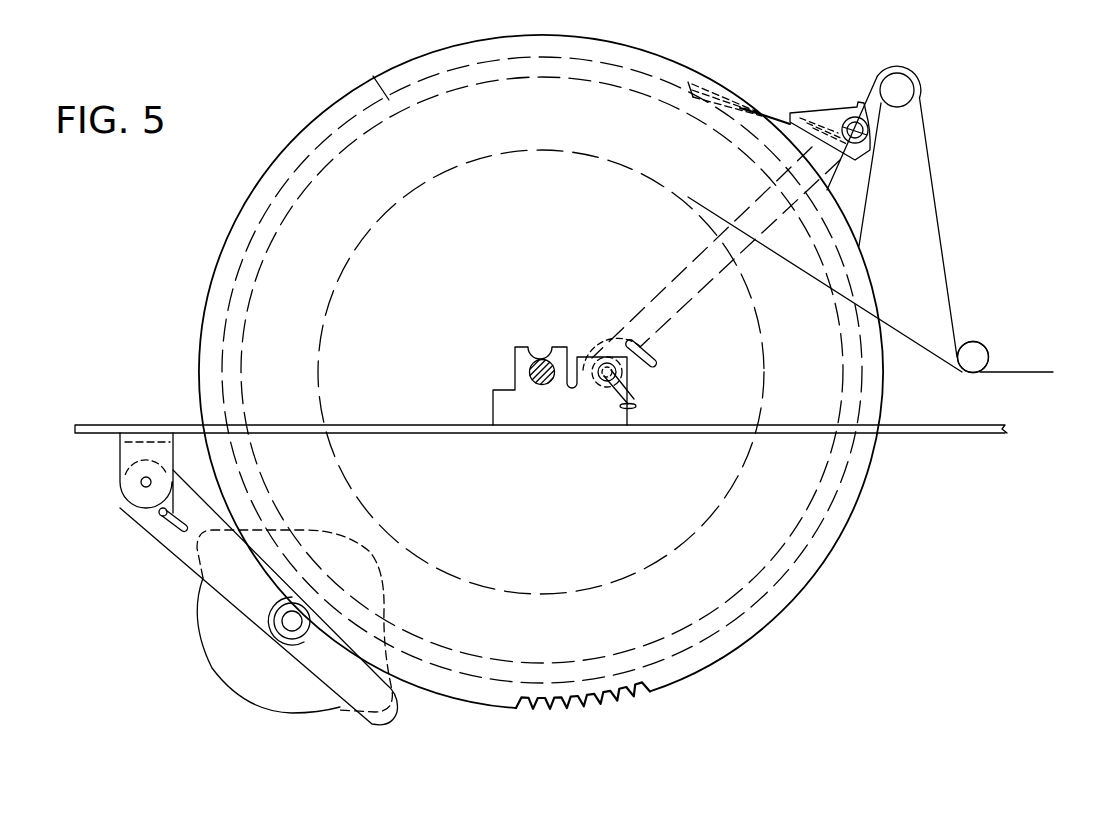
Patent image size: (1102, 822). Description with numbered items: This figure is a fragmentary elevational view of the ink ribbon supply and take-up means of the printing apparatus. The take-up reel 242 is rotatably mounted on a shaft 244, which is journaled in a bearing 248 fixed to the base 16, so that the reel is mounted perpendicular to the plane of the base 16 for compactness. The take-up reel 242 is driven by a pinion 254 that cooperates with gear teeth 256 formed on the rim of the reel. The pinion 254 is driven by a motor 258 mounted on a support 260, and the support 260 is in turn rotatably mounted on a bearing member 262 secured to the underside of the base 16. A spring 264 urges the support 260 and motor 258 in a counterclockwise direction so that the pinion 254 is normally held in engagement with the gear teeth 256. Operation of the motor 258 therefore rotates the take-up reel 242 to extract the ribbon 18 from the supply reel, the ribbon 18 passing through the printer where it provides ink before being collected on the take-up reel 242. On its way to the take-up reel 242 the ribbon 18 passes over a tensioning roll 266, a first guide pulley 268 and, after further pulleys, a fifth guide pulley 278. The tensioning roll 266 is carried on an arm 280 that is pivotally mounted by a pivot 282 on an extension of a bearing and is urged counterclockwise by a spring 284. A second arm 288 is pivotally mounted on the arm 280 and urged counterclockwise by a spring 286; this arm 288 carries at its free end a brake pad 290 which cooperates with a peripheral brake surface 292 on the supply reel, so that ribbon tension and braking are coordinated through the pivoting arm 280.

The base 16 is at (950, 430).
The ribbon 18 is at (930, 178).
The take-up reel 242 is at (772, 603).
The shaft 244 is at (530, 370).
The bearing 248 is at (493, 407).
The pinion 254 is at (262, 614).
The gear teeth 256 is at (637, 692).
The motor 258 is at (211, 653).
The support 260 is at (183, 548).
The bearing member 262 is at (123, 455).
The spring 264 is at (159, 514).
The tensioning roll 266 is at (914, 89).
The first guide pulley 268 is at (977, 345).
The fifth guide pulley 278 is at (973, 357).
The arm 280 is at (667, 278).
The pivot 282 is at (626, 387).
The spring 284 is at (657, 349).
The spring 286 is at (857, 112).
The arm 288 is at (768, 113).
The brake pad 290 is at (700, 97).
The peripheral brake surface 292 is at (376, 78).